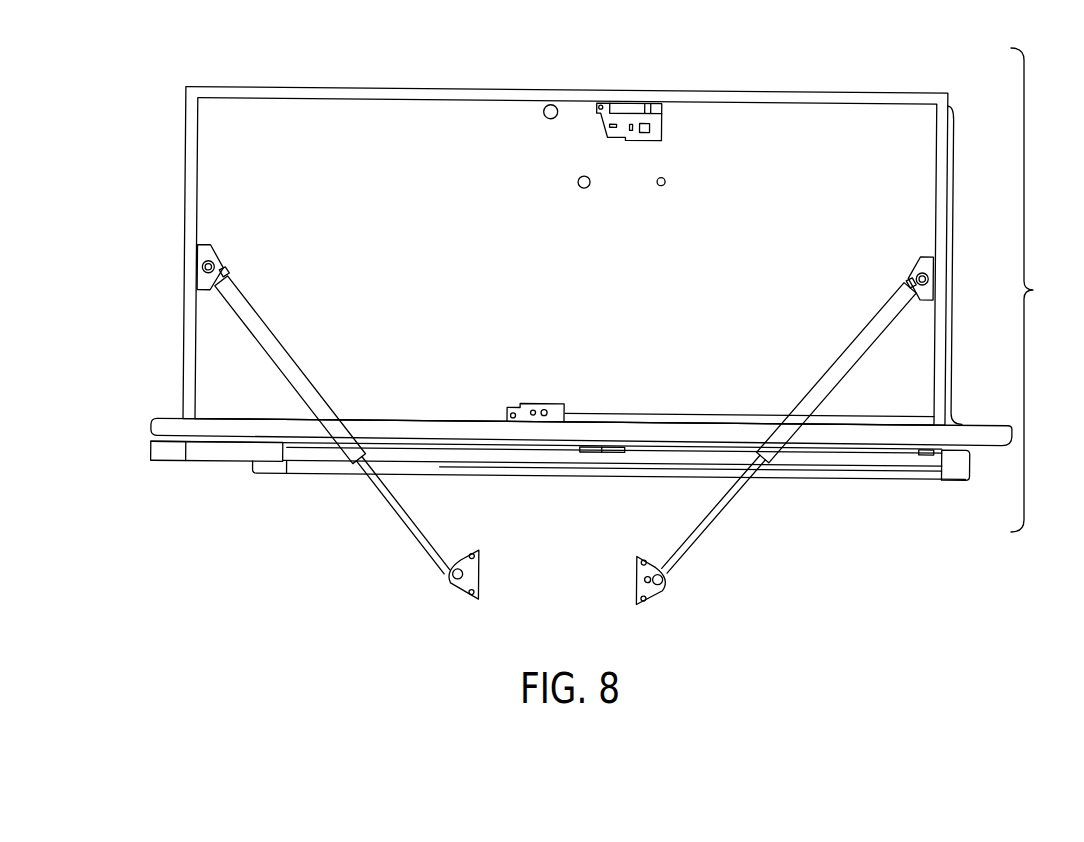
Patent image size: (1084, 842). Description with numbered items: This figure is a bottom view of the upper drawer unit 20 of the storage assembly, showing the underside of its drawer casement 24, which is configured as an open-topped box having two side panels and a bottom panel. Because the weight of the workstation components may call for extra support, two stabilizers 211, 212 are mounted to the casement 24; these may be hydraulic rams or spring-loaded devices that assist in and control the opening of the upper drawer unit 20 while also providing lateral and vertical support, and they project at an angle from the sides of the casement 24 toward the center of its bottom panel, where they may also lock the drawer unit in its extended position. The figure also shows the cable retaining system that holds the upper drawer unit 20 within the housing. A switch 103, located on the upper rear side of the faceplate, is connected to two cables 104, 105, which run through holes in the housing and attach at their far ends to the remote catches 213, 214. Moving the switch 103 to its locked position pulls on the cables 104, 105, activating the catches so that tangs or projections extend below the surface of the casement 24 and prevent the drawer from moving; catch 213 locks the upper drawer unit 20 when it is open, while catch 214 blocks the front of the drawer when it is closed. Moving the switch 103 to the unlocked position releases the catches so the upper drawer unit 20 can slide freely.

The upper drawer unit 20 is at (1034, 290).
The drawer casement 24 is at (902, 140).
The switch 103 is at (983, 422).
The cable 104 is at (962, 282).
The cable 105 is at (672, 412).
The stabilizer 211 is at (735, 520).
The stabilizer 212 is at (478, 612).
The remote catch 213 is at (628, 104).
The remote catch 214 is at (540, 404).